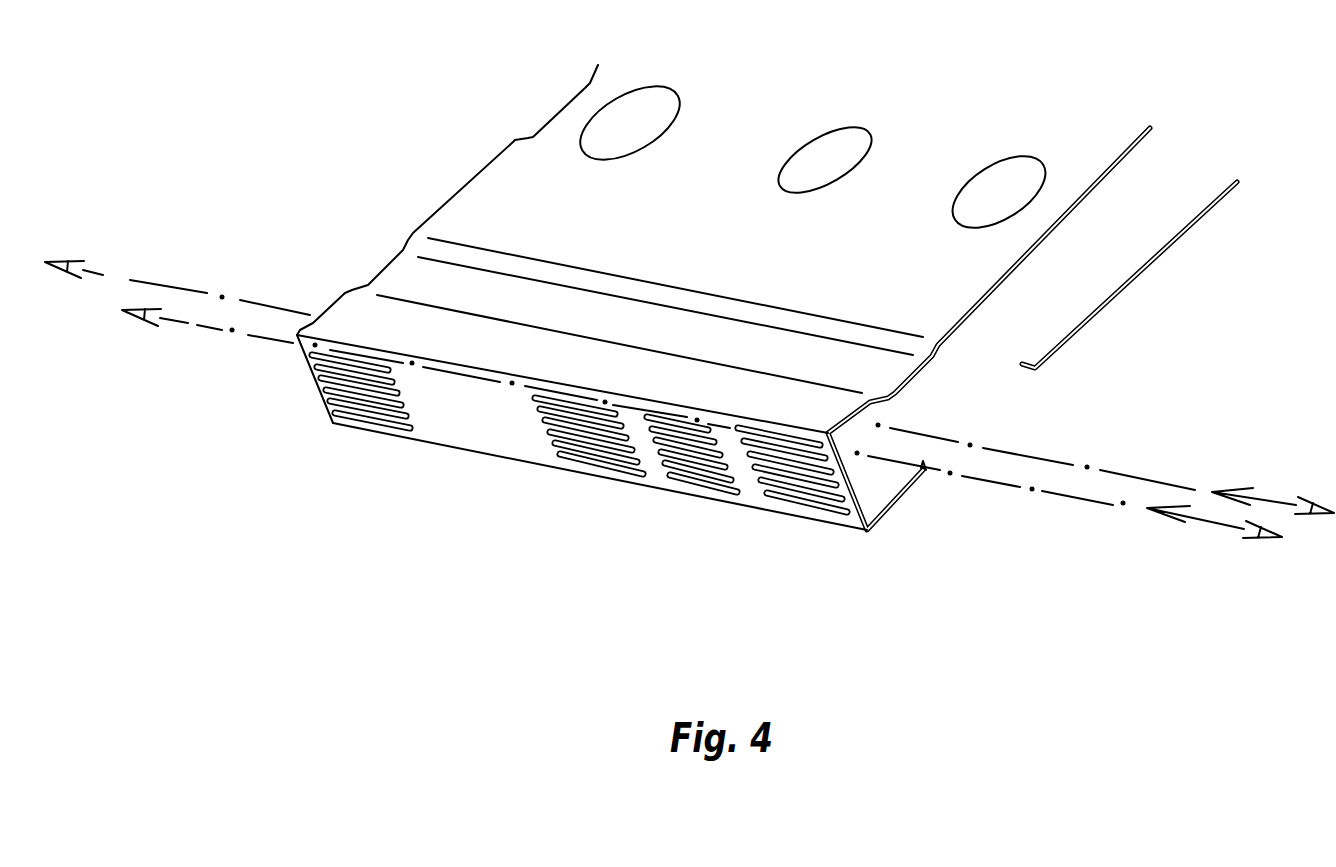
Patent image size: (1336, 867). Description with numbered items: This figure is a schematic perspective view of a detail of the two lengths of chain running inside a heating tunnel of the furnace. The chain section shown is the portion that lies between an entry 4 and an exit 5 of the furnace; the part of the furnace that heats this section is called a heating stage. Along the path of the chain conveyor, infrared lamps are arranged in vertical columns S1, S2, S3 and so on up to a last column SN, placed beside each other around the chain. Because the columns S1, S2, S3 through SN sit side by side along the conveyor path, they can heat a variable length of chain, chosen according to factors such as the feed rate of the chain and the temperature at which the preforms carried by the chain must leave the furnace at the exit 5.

The exit 5 is at (324, 292).
The entry 4 is at (908, 515).
The vertical column SN is at (348, 445).
The vertical column S3 is at (572, 488).
The vertical column S2 is at (673, 508).
The vertical column S1 is at (770, 528).